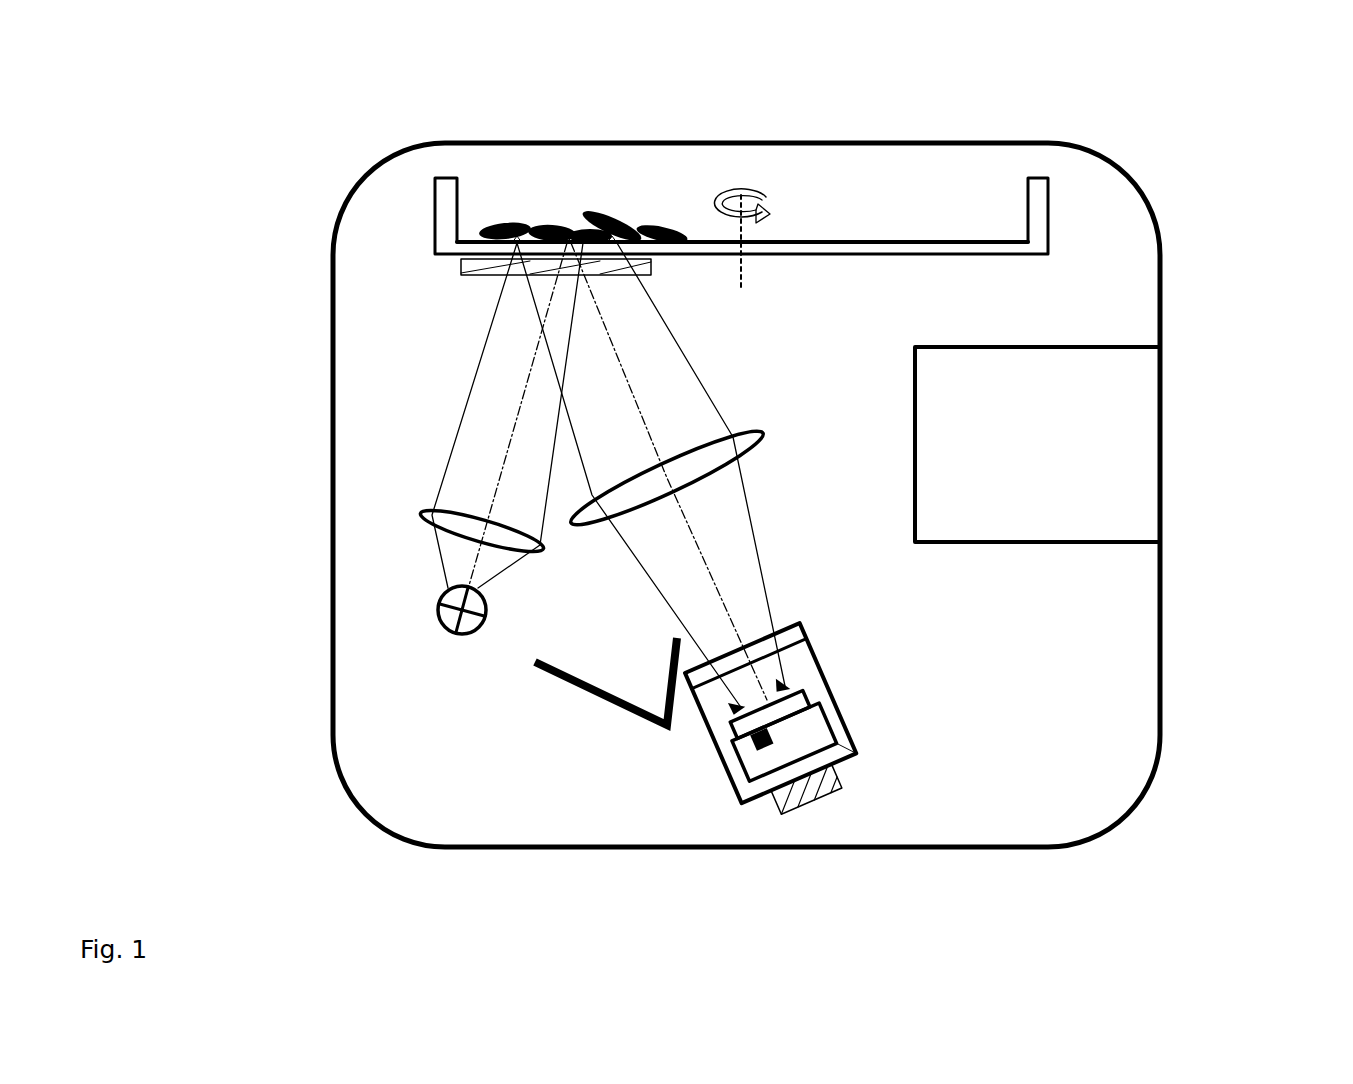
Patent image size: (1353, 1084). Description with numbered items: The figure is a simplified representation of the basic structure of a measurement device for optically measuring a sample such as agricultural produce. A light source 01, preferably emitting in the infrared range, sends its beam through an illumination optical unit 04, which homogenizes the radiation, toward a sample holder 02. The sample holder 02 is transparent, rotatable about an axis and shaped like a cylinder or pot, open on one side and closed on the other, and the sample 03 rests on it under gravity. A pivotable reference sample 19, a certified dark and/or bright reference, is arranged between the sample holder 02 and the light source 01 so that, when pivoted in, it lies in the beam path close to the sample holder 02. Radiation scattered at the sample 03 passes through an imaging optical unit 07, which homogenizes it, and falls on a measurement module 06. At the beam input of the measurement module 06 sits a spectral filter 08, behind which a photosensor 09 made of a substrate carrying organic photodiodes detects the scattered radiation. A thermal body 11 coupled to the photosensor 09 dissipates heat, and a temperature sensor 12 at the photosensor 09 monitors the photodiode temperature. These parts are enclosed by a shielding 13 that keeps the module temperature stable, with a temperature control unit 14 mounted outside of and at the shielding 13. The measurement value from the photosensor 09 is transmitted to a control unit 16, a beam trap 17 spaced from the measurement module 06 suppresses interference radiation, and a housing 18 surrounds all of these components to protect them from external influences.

The light source 01 is at (437, 618).
The sample holder 02 is at (878, 248).
The sample 03 is at (600, 215).
The illumination optical unit 04 is at (440, 517).
The measurement module 06 is at (805, 794).
The imaging optical unit 07 is at (610, 493).
The spectral filter 08 is at (697, 685).
The photosensor 09 is at (738, 745).
The thermal body 11 is at (765, 768).
The temperature sensor 12 is at (752, 745).
The shielding 13 is at (835, 758).
The temperature control unit 14 is at (823, 792).
The control unit 16 is at (1133, 488).
The beam trap 17 is at (600, 698).
The housing 18 is at (1162, 633).
The reference sample 19 is at (470, 268).